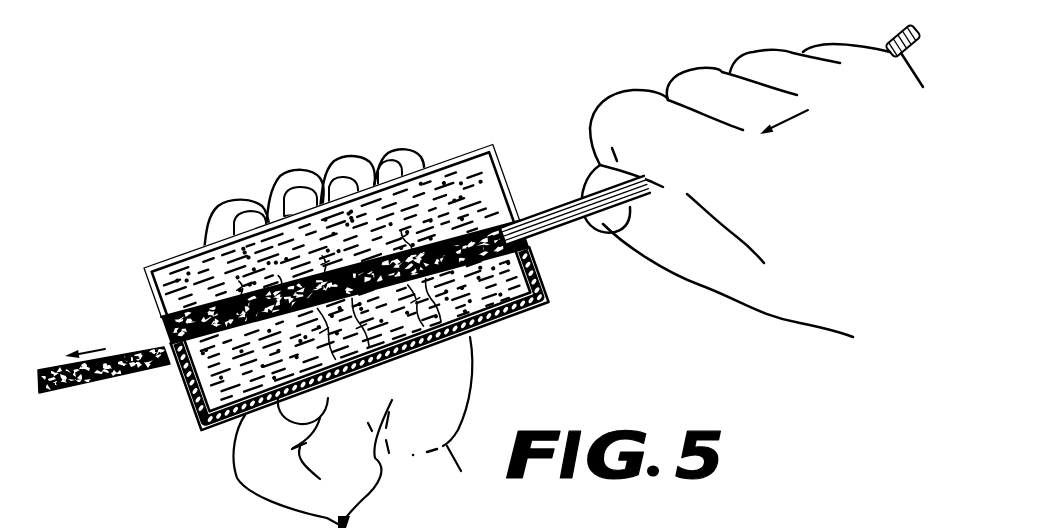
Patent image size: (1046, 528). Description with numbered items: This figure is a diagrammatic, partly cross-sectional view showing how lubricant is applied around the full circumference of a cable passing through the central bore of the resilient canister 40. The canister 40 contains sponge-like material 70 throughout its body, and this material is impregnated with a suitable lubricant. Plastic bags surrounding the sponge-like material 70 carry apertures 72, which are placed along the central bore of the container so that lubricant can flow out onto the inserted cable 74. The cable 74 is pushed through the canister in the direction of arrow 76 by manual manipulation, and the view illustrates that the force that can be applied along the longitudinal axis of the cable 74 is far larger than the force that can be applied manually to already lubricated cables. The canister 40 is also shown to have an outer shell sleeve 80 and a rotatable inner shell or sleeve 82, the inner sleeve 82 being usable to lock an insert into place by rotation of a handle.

The resilient canister 40 is at (452, 143).
The sponge-like material 70 is at (493, 157).
The apertures 72 is at (242, 302).
The cable 74 is at (543, 212).
The arrow 76 is at (793, 120).
The outer shell sleeve 80 is at (173, 395).
The rotatable inner shell 82 is at (547, 277).